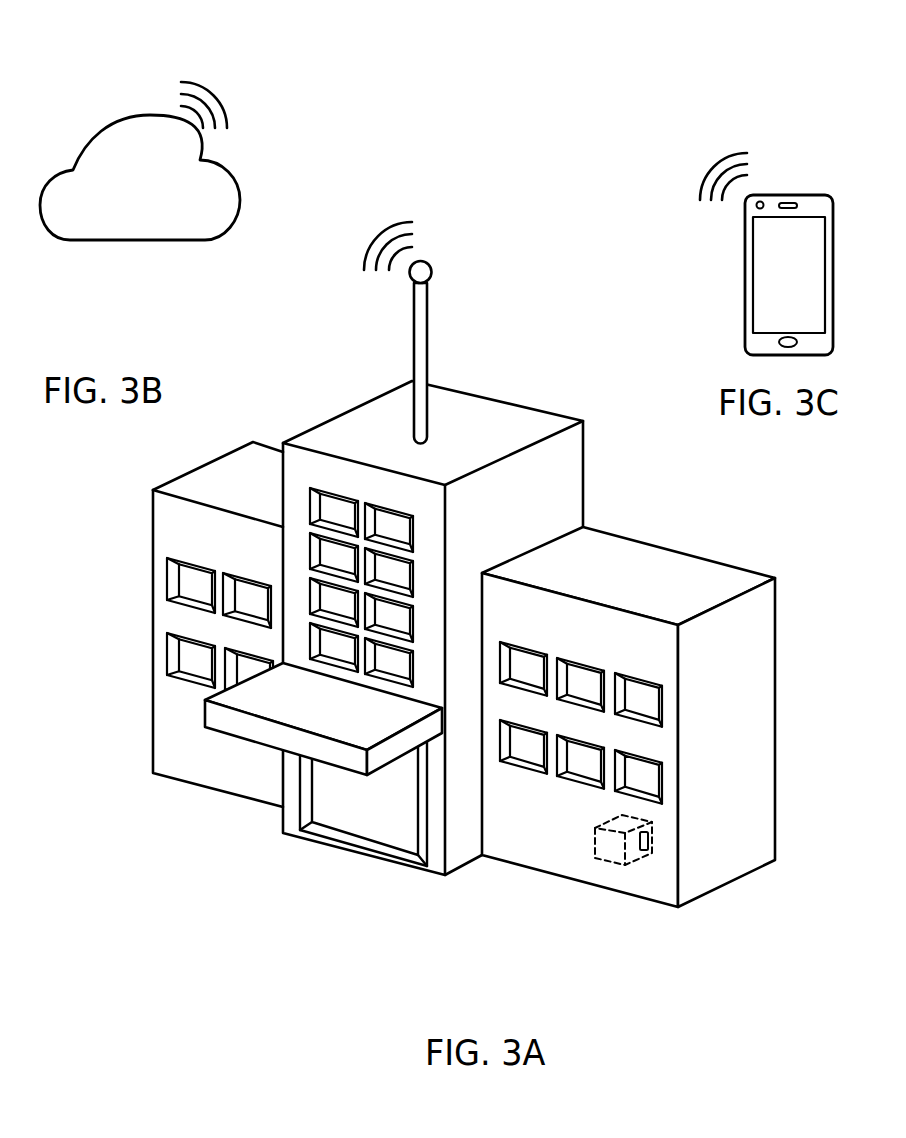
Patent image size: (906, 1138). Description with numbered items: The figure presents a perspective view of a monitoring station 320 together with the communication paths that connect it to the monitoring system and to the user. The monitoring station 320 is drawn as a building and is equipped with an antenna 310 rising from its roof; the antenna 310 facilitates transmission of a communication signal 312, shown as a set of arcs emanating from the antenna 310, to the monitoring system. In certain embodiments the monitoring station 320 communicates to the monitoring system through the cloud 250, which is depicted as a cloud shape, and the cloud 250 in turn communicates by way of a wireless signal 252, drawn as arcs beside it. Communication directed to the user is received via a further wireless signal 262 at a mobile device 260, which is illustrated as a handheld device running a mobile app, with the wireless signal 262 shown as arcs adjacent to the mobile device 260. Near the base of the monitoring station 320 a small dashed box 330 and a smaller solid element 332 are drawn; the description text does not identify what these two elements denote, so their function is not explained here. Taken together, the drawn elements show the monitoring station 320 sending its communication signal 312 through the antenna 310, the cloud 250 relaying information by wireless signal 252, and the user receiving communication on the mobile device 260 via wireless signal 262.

In FIG. 3B, the cloud 250 is at (113, 227).
In FIG. 3B, the wireless signal 252 is at (223, 105).
In FIG. 3C, the mobile device 260 is at (770, 280).
In FIG. 3C, the wireless signal 262 is at (722, 155).
In FIG. 3A, the antenna 310 is at (427, 338).
In FIG. 3A, the communication signal 312 is at (390, 220).
In FIG. 3A, the monitoring station 320 is at (650, 575).
In FIG. 3A, the sensor device location 330 is at (600, 850).
In FIG. 3A, the sensor 332 is at (653, 842).